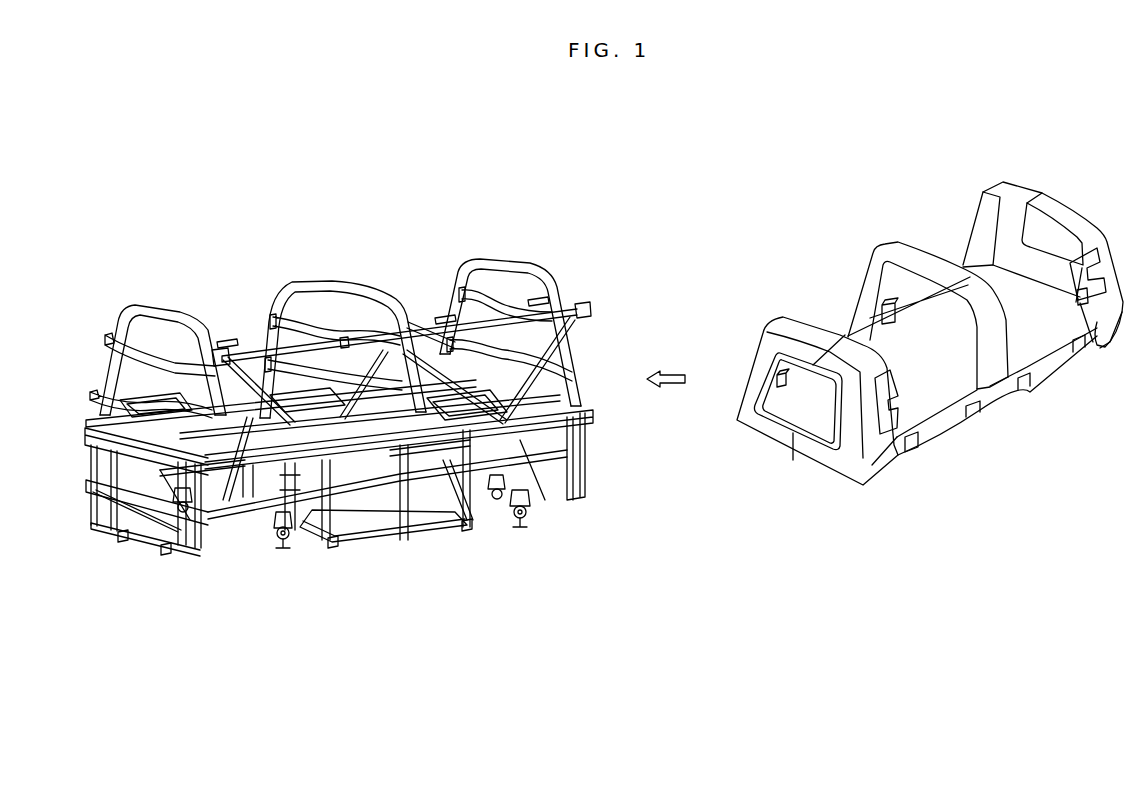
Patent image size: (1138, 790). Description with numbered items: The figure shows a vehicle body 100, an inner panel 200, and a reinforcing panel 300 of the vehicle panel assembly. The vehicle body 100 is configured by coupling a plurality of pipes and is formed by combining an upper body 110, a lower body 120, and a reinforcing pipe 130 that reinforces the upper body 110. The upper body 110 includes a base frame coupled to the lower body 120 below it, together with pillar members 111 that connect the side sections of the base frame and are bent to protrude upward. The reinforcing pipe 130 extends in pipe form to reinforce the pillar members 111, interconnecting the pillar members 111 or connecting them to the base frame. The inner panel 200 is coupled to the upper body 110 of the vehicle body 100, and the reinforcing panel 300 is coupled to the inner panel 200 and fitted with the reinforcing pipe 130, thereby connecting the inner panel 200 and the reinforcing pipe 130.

The vehicle body 100 is at (378, 152).
The upper body 110 is at (140, 288).
The pillar members 111 is at (191, 311).
The lower body 120 is at (144, 556).
The reinforcing pipe 130 is at (470, 305).
The inner panel 200 is at (868, 235).
The reinforcing panel 300 is at (1082, 300).